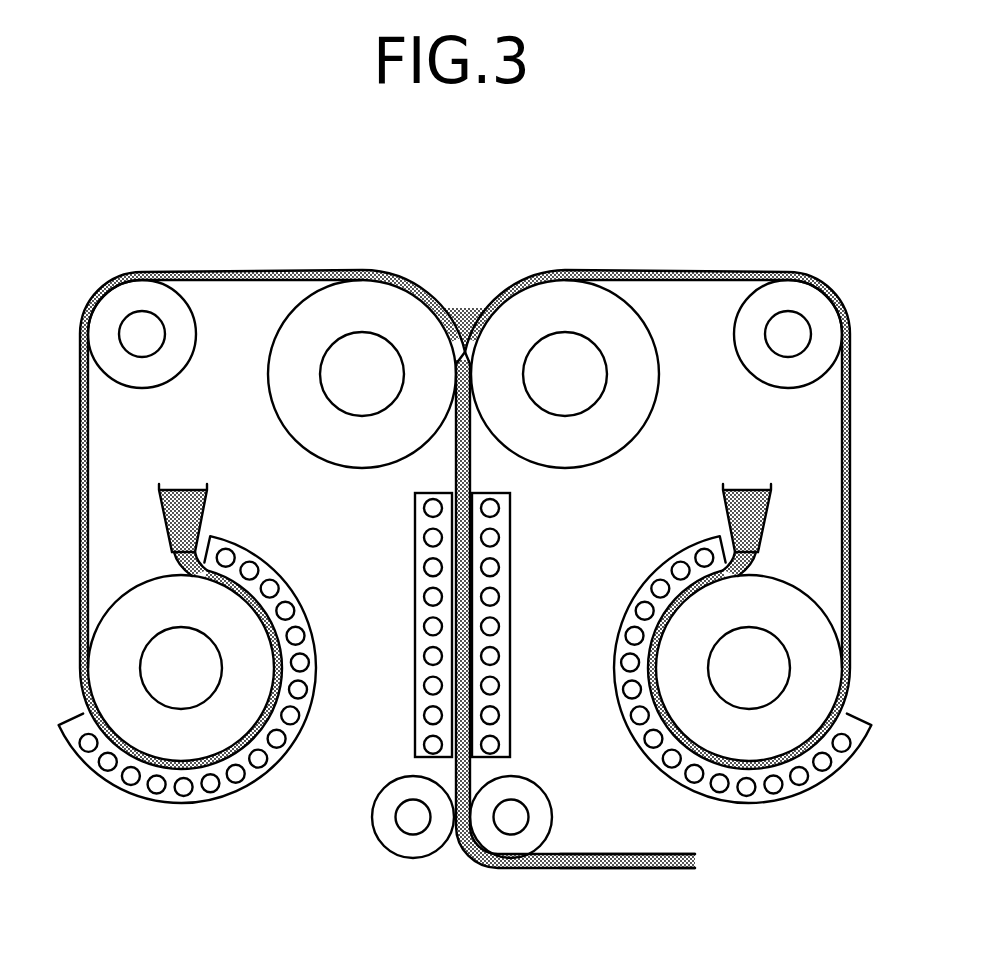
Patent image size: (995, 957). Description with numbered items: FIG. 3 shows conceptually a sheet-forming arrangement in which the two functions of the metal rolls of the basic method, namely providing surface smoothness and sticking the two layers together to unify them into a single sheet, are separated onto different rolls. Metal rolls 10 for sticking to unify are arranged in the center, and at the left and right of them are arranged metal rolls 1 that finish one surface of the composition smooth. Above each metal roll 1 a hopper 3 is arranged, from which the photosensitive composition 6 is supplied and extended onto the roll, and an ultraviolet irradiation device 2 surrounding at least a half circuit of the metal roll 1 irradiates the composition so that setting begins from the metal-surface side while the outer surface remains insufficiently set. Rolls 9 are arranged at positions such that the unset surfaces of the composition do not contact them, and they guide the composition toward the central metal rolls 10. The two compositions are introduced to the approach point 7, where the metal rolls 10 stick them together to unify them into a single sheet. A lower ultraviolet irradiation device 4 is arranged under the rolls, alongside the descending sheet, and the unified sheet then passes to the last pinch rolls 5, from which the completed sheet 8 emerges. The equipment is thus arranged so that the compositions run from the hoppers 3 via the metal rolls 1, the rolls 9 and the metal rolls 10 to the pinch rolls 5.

The metal roll 1 is at (103, 653).
The ultraviolet irradiation device 2 is at (187, 790).
The hopper 3 is at (158, 502).
The lower ultraviolet irradiation device 4 is at (433, 570).
The pinch roll 5 is at (390, 792).
The photosensitive composition 6 is at (178, 567).
The approach point 7 is at (465, 340).
The sheet 8 is at (623, 870).
The roll 9 is at (138, 290).
The metal roll for sticking 10 is at (373, 287).